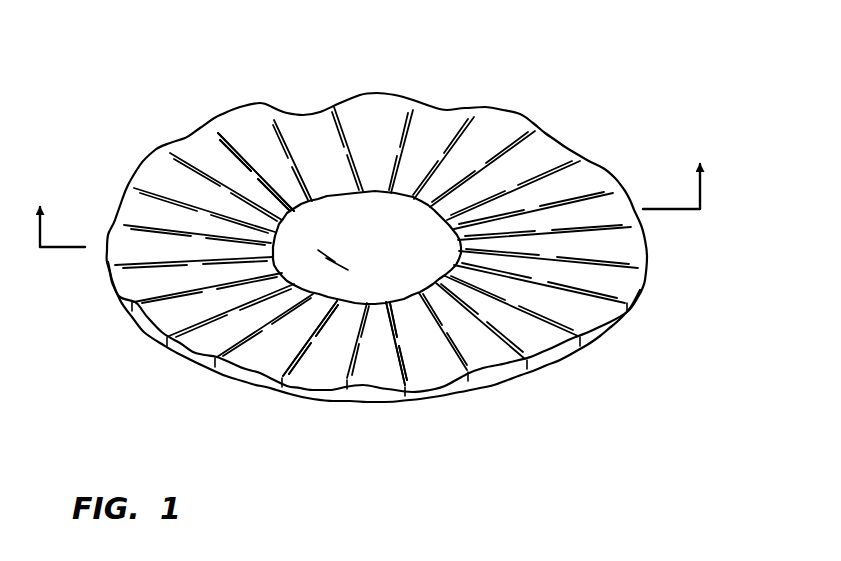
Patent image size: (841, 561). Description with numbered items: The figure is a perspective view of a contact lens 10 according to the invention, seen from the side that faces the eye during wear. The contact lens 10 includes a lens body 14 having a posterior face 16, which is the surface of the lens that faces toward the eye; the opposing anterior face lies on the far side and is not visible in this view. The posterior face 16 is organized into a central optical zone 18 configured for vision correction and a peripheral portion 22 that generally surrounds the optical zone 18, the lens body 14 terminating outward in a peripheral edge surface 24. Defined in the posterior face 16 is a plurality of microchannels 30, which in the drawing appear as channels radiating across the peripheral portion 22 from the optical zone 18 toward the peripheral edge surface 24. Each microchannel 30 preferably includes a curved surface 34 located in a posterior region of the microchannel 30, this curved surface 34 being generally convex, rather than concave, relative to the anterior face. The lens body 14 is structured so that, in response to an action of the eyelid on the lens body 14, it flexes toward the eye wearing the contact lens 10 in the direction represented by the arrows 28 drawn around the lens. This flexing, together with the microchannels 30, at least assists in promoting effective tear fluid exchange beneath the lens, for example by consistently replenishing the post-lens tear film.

The contact lens 10 is at (170, 107).
The lens body 14 is at (542, 118).
The posterior face 16 is at (404, 85).
The optical zone 18 is at (379, 249).
The peripheral portion 22 is at (585, 313).
The peripheral edge surface 24 is at (527, 377).
The arrows 28 is at (305, 100).
The microchannels 30 is at (305, 386).
The curved surface 34 is at (255, 125).